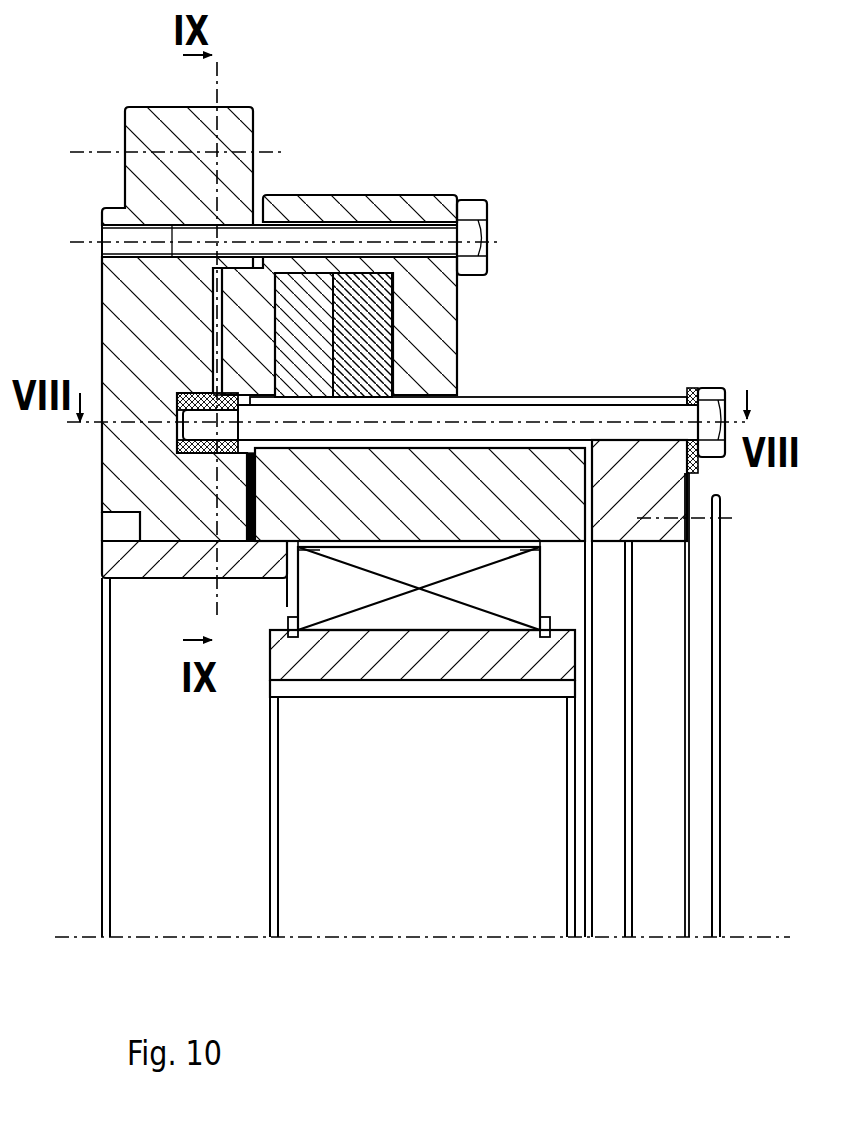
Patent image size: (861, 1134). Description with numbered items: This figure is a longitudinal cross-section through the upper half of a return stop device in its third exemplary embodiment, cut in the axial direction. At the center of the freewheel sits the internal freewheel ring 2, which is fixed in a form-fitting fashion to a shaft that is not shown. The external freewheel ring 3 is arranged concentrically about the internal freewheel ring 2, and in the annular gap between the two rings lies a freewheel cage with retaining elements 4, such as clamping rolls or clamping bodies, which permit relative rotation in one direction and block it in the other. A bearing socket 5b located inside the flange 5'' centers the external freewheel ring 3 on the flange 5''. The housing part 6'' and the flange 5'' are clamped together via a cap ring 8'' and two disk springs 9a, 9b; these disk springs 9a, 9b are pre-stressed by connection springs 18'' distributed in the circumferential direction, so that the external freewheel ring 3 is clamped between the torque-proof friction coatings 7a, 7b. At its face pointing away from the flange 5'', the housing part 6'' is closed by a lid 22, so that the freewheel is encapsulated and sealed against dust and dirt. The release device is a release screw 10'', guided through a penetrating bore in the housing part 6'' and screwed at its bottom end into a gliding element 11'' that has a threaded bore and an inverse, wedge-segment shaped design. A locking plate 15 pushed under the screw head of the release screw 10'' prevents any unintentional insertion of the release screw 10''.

The internal freewheel ring 2 is at (391, 657).
The external freewheel ring 3 is at (566, 470).
The retaining elements 4 is at (443, 617).
The flange 5'' is at (141, 324).
The bearing socket 5b is at (146, 567).
The housing part 6'' is at (685, 688).
The friction coating 7a is at (250, 545).
The friction coating 7b is at (590, 538).
The cap ring 8'' is at (355, 257).
The disk spring 9a is at (318, 290).
The disk spring 9b is at (371, 305).
The release screw 10'' is at (454, 390).
The gliding element 11'' is at (135, 439).
The locking plate 15 is at (692, 394).
The connection springs 18'' is at (348, 206).
The lid 22 is at (703, 743).